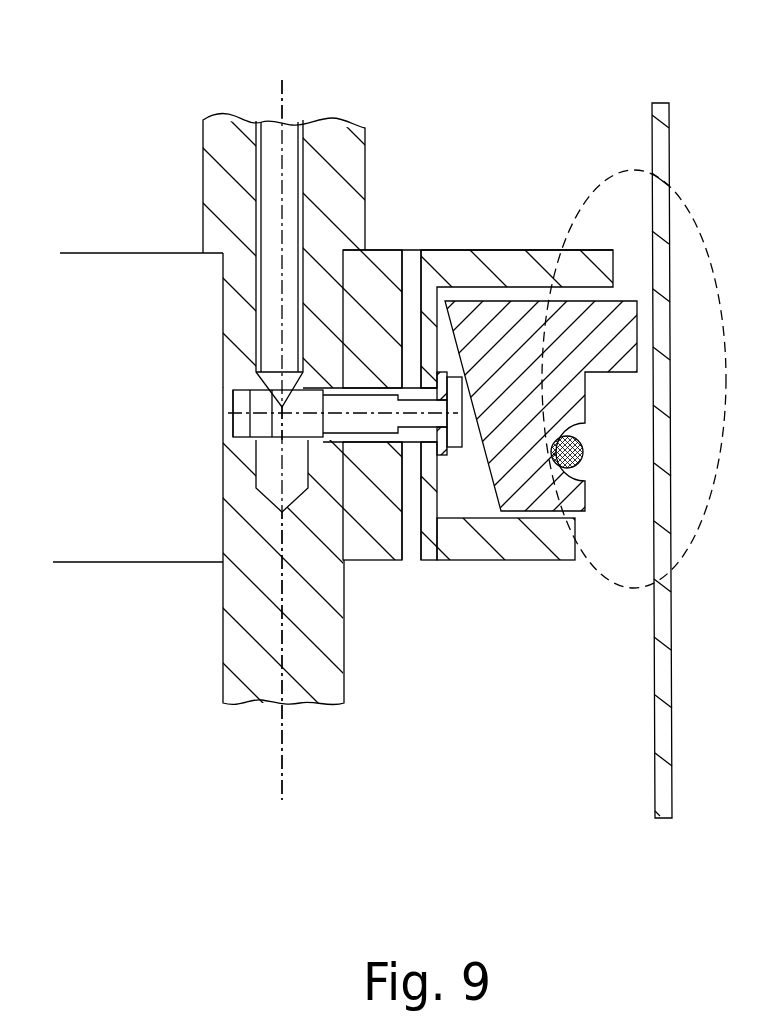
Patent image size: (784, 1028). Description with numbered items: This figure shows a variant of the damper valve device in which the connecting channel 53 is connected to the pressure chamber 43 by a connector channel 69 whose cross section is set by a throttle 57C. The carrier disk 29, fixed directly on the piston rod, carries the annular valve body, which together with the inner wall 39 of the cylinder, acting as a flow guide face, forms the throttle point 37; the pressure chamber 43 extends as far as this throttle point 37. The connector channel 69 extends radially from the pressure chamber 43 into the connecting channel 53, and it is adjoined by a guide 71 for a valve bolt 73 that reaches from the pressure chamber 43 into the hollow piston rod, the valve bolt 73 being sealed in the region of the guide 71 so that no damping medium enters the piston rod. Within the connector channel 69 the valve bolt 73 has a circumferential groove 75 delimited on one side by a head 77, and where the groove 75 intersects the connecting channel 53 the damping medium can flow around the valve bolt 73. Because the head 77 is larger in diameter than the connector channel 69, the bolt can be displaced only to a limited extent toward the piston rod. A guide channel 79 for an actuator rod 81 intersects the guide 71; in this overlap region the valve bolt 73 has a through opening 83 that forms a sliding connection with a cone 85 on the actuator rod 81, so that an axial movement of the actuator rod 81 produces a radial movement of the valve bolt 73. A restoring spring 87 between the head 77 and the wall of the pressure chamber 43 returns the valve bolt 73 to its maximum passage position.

The carrier disk 29 is at (523, 263).
The throttle point 37 is at (687, 207).
The inner wall 39 is at (652, 148).
The pressure chamber 43 is at (458, 494).
The connecting channel 53 is at (407, 470).
The throttle 57C is at (413, 390).
The connector channel 69 is at (429, 522).
The guide 71 is at (380, 427).
The valve bolt 73 is at (371, 465).
The circumferential groove 75 is at (406, 387).
The head 77 is at (464, 448).
The guide channel 79 is at (253, 328).
The actuator rod 81 is at (277, 270).
The through opening 83 is at (302, 423).
The cone 85 is at (268, 393).
The restoring spring 87 is at (448, 398).